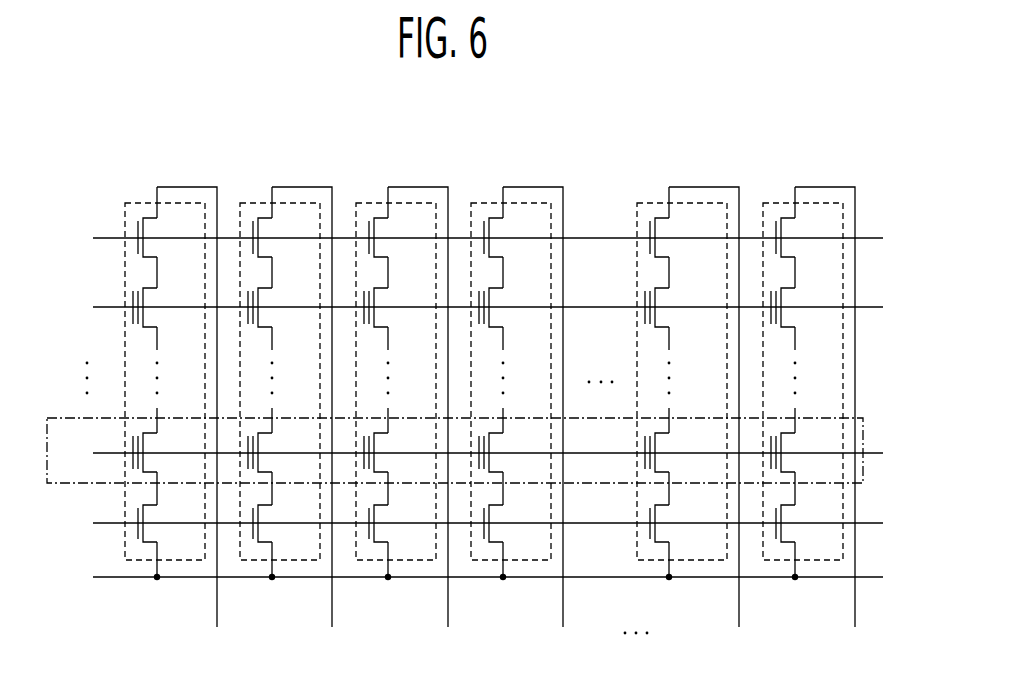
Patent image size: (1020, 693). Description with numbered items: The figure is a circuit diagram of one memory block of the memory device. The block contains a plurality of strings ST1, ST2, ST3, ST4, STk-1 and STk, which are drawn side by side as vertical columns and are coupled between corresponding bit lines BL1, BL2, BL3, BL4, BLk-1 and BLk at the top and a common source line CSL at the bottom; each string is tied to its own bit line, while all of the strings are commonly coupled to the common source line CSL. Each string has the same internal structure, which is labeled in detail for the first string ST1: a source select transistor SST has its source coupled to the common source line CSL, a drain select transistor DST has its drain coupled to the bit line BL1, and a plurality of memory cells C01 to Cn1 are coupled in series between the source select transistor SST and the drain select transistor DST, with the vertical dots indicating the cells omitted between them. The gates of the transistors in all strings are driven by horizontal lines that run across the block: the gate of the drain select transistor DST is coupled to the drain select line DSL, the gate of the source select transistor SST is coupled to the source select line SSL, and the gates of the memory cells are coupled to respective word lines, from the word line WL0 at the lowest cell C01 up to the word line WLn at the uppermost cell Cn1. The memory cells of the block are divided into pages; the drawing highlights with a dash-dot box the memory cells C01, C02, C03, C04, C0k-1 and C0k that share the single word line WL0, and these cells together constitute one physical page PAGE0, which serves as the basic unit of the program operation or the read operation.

The string ST1 is at (139, 201).
The string ST2 is at (254, 201).
The string ST3 is at (370, 201).
The string ST4 is at (485, 201).
The string STk-1 is at (651, 201).
The string STk is at (777, 201).
The drain select line DSL is at (470, 239).
The word line WLn is at (470, 308).
The word line WL0 is at (470, 453).
The source select line SSL is at (470, 524).
The common source line CSL is at (470, 578).
The bit line BL1 is at (195, 421).
The bit line BL2 is at (310, 421).
The bit line BL3 is at (425, 421).
The bit line BL4 is at (541, 421).
The bit line BLk-1 is at (722, 421).
The bit line BLk is at (836, 421).
The drain select transistor DST is at (166, 235).
The source select transistor SST is at (164, 519).
The memory cell Cn1 is at (161, 304).
The memory cell C01 is at (161, 449).
The memory cell C02 is at (276, 449).
The memory cell C03 is at (392, 449).
The memory cell C04 is at (507, 449).
The memory cell C0k-1 is at (686, 449).
The memory cell C0k is at (801, 449).
The physical page PAGE0 is at (863, 420).